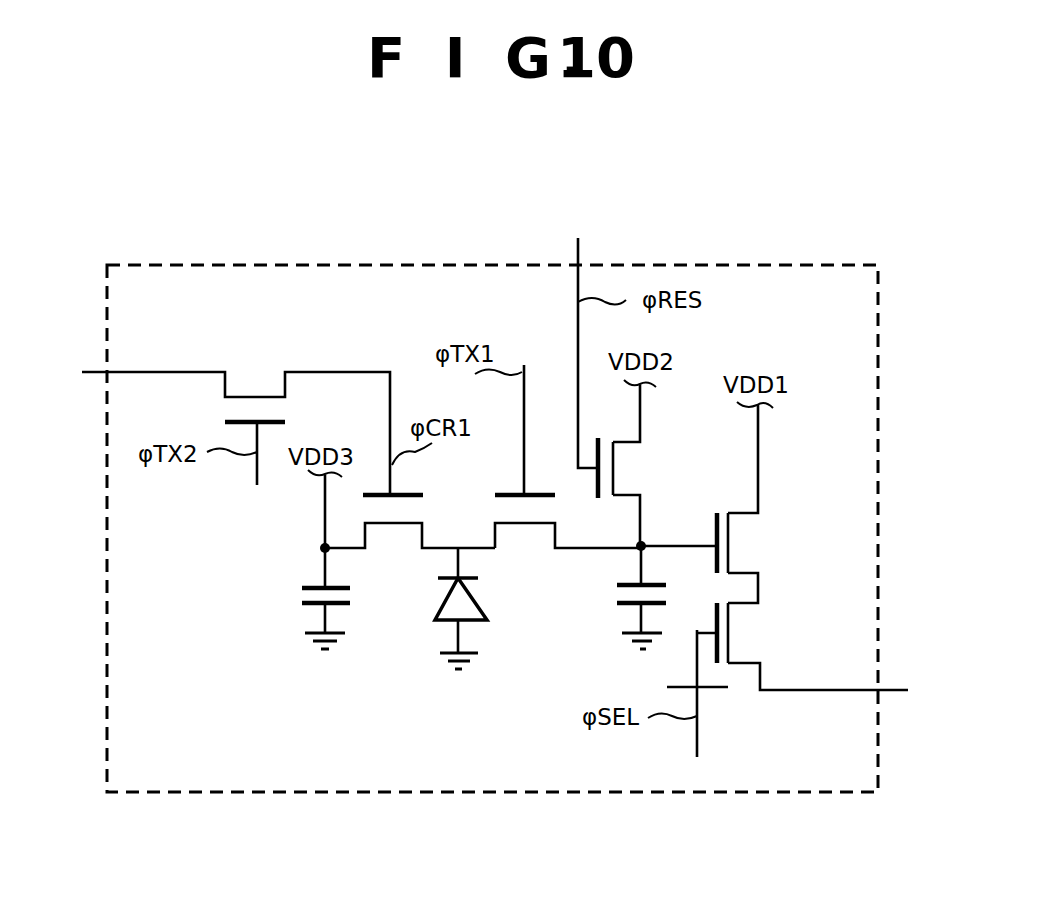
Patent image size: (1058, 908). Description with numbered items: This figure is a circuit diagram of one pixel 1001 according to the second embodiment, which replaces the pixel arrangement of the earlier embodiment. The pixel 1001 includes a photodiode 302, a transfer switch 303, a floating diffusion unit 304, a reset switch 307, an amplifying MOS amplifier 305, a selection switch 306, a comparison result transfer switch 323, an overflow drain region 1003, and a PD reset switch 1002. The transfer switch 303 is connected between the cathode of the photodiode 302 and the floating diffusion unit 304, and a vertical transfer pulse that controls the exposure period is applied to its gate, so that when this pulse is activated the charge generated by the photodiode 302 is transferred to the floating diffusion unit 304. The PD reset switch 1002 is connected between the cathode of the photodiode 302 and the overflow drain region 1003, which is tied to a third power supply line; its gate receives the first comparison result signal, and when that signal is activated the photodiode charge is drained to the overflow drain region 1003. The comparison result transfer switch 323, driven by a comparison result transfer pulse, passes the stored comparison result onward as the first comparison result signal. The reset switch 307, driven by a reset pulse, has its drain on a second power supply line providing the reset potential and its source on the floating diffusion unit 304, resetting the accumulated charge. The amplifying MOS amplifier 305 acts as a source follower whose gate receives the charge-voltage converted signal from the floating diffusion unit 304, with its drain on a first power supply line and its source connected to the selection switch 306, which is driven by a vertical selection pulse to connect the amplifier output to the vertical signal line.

The pixel 1001 is at (781, 262).
The comparison result transfer switch 323 is at (258, 392).
The PD reset switch 1002 is at (393, 530).
The overflow drain region 1003 is at (300, 598).
The transfer switch 303 is at (525, 530).
The photodiode 302 is at (441, 622).
The floating diffusion unit 304 is at (617, 596).
The reset switch 307 is at (628, 470).
The amplifying MOS amplifier 305 is at (745, 566).
The selection switch 306 is at (745, 656).